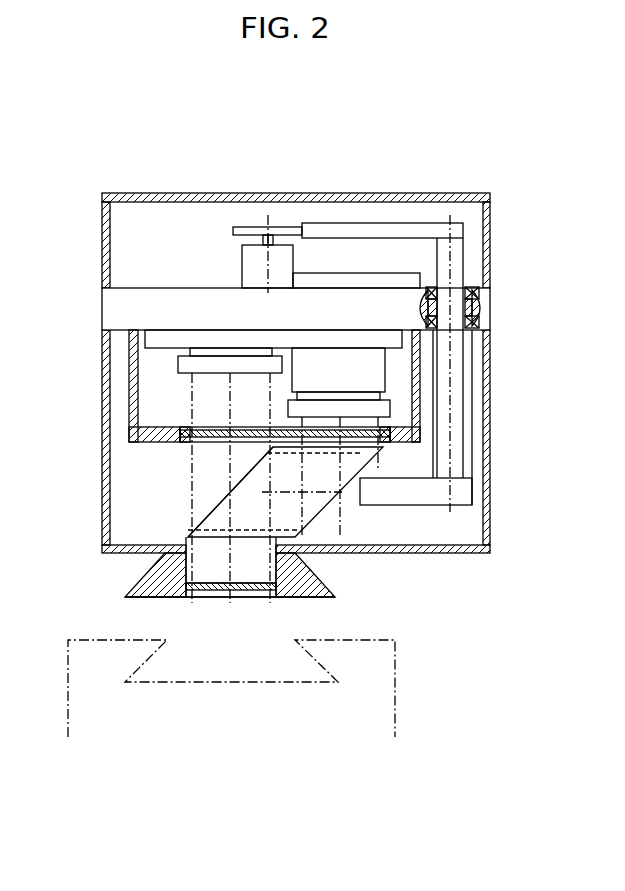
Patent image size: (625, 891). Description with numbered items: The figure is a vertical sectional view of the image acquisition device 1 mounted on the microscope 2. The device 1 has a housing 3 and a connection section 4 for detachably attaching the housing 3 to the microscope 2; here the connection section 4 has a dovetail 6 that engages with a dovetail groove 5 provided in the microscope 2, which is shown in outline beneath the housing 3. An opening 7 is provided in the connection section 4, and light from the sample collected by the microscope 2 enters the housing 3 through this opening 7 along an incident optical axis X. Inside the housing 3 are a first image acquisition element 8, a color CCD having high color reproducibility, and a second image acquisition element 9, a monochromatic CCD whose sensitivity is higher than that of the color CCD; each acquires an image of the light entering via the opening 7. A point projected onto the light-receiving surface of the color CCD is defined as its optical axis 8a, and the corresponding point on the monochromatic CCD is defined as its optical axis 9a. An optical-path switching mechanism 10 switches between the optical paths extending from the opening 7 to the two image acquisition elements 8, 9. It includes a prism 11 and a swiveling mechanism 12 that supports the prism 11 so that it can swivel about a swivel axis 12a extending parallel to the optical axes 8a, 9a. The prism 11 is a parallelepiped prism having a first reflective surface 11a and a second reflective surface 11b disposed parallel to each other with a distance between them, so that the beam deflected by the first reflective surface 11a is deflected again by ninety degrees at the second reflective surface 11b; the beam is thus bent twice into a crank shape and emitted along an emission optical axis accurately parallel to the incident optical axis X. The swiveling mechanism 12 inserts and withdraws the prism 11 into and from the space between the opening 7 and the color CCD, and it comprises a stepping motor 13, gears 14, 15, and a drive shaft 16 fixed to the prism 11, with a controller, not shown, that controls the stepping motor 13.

The image acquisition device 1 is at (442, 135).
The microscope 2 is at (395, 688).
The housing 3 is at (492, 259).
The connection section 4 is at (265, 605).
The dovetail groove 5 is at (306, 653).
The dovetail 6 is at (330, 592).
The opening 7 is at (190, 572).
The first image acquisition element 8 is at (178, 363).
The optical axis 8a is at (230, 397).
The second image acquisition element 9 is at (392, 406).
The optical axis 9a is at (345, 494).
The optical-path switching mechanism 10 is at (460, 524).
The prism 11 is at (374, 468).
The first reflective surface 11a is at (213, 508).
The second reflective surface 11b is at (297, 518).
The swiveling mechanism 12 is at (470, 232).
The swivel axis 12a is at (450, 352).
The stepping motor 13 is at (242, 256).
The gear 14 is at (285, 227).
The gear 15 is at (330, 223).
The drive shaft 16 is at (465, 380).
The incident optical axis X is at (233, 598).